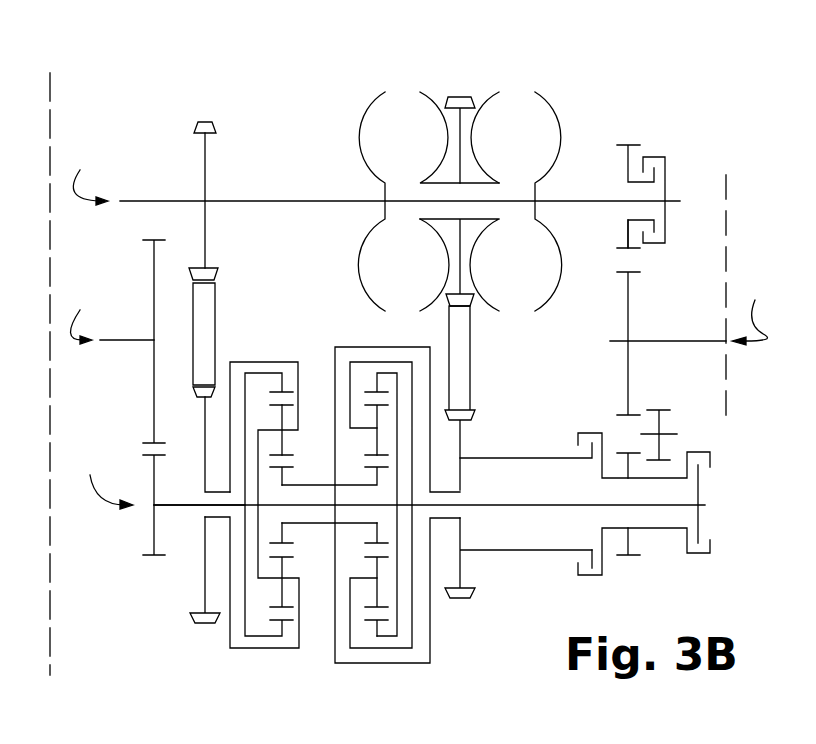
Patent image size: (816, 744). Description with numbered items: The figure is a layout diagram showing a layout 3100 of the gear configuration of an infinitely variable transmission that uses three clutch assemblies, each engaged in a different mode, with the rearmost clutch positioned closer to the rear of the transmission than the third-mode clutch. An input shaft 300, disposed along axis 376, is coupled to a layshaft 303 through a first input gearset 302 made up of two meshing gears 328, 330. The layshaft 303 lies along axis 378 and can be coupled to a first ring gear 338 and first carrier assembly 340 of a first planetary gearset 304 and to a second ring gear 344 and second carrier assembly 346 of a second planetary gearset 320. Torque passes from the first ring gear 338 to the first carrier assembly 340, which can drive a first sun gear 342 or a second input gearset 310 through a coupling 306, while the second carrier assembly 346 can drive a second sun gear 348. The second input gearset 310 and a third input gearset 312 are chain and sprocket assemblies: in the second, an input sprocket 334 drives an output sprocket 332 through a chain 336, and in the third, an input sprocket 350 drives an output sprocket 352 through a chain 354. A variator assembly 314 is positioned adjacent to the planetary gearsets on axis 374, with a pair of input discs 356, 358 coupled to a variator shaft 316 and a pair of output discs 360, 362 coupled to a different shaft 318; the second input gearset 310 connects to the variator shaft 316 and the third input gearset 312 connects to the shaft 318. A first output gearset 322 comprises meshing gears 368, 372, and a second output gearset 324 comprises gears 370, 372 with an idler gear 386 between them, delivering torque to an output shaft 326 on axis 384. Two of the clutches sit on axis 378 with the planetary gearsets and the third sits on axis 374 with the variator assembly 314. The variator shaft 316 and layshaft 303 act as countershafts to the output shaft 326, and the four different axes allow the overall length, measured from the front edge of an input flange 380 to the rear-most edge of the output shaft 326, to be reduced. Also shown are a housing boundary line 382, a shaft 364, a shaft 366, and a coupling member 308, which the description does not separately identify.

The layout 3100 is at (148, 83).
The input flange 380 is at (50, 128).
The axis 374 is at (86, 172).
The variator shaft 316 is at (250, 201).
The output sprocket 332 is at (205, 160).
The chain 336 is at (232, 298).
The variator assembly 314 is at (358, 92).
The input disc 356 is at (358, 137).
The input disc 358 is at (548, 98).
The output disc 360 is at (447, 125).
The output disc 362 is at (472, 125).
The input sprocket 350 is at (447, 258).
The shaft 318 is at (490, 218).
The chain 354 is at (478, 366).
The first output gearset 322 is at (640, 122).
The gear 368 is at (628, 236).
The gear 372 is at (628, 295).
The output shaft 326 is at (678, 341).
The output housing boundary 382 is at (726, 250).
The axis 384 is at (750, 310).
The idler gear 386 is at (660, 432).
The shaft 364 is at (517, 458).
The main shaft 366 is at (543, 505).
The layshaft 303 is at (176, 505).
The gear 370 is at (628, 543).
The second output gearset 324 is at (630, 565).
The output sprocket 352 is at (464, 578).
The third input gearset 312 is at (462, 604).
The second planetary gearset 320 is at (406, 672).
The ring gear 308 is at (345, 345).
The second ring gear 344 is at (377, 373).
The second carrier assembly 346 is at (377, 413).
The second sun gear 348 is at (377, 476).
The coupling 306 is at (248, 360).
The first ring gear 338 is at (250, 383).
The first carrier assembly 340 is at (282, 420).
The first sun gear 342 is at (282, 476).
The first planetary gearset 304 is at (270, 670).
The second input gearset 310 is at (196, 636).
The input sprocket 334 is at (205, 588).
The first input gearset 302 is at (146, 568).
The gear 330 is at (154, 540).
The gear 328 is at (154, 404).
The axis 378 is at (102, 479).
The axis 376 is at (85, 313).
The input shaft 300 is at (112, 340).